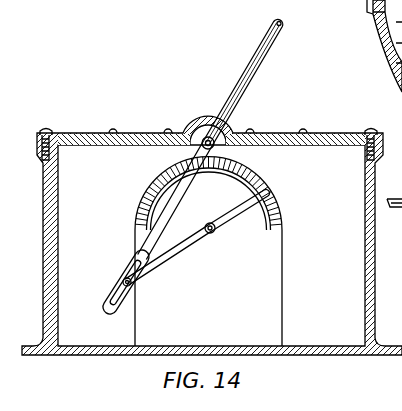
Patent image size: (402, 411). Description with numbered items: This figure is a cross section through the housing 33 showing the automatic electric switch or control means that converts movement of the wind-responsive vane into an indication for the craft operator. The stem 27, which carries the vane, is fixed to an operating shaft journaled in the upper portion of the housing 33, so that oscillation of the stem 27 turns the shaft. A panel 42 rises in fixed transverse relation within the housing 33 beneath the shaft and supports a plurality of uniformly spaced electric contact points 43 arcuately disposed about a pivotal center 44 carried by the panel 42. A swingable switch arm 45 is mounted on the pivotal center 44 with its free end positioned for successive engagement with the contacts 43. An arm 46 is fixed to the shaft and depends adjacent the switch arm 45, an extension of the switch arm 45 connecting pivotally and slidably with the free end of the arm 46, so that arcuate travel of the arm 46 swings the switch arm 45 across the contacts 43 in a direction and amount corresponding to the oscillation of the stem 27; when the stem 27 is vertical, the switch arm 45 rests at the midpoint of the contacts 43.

The stem 27 is at (260, 67).
The housing 33 is at (57, 235).
The panel 42 is at (208, 288).
The electric contact points 43 is at (257, 170).
The pivotal center 44 is at (213, 219).
The switch arm 45 is at (237, 211).
The arm 46 is at (156, 233).